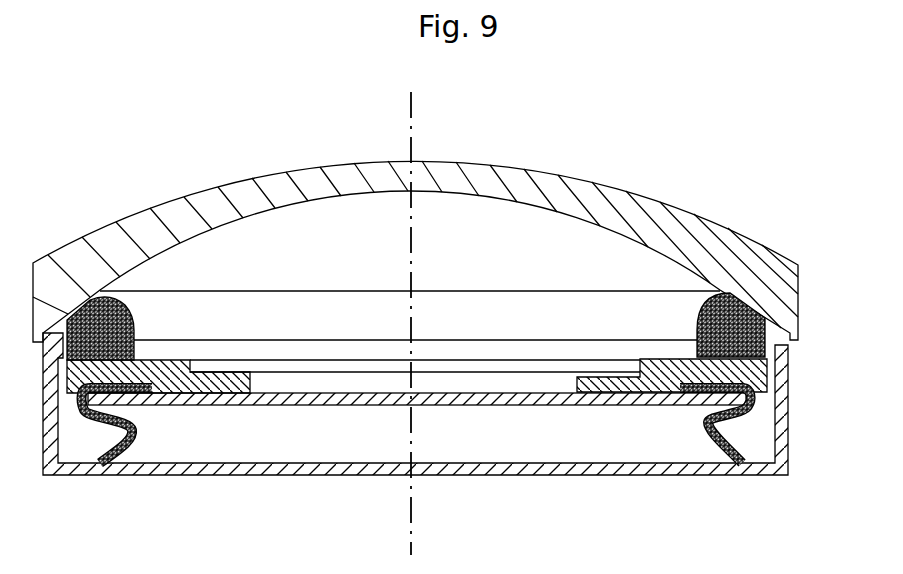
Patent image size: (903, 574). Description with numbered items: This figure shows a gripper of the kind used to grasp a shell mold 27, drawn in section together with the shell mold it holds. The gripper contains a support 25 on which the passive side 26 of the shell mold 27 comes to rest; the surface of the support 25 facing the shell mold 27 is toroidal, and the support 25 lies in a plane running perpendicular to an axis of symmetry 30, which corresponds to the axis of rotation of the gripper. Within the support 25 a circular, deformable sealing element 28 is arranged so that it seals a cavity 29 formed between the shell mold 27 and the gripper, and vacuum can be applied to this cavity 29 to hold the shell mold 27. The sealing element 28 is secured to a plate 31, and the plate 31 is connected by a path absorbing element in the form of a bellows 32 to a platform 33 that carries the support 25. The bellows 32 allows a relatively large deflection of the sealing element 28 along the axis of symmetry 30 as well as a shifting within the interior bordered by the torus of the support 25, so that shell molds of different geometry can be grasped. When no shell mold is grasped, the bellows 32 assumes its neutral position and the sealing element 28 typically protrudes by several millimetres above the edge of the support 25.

The support 25 is at (788, 356).
The passive side 26 is at (663, 252).
The shell mold 27 is at (790, 281).
The sealing element 28 is at (780, 323).
The cavity 29 is at (478, 258).
The axis of symmetry 30 is at (412, 104).
The plate 31 is at (648, 410).
The bellows 32 is at (730, 418).
The platform 33 is at (750, 473).